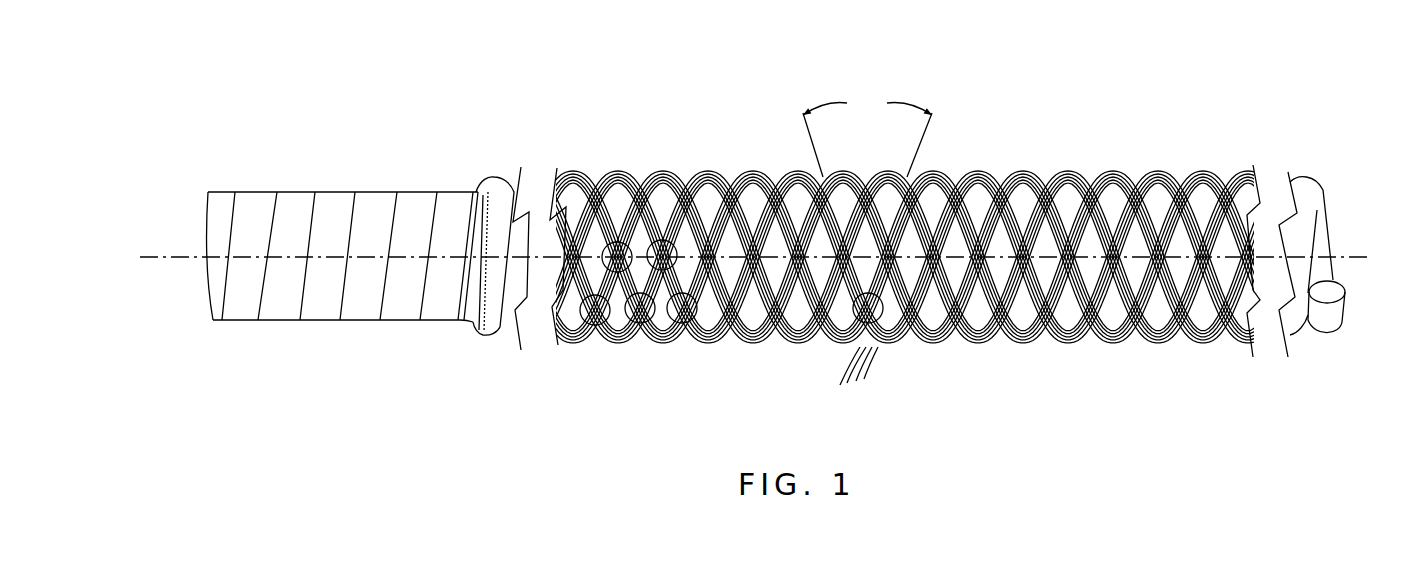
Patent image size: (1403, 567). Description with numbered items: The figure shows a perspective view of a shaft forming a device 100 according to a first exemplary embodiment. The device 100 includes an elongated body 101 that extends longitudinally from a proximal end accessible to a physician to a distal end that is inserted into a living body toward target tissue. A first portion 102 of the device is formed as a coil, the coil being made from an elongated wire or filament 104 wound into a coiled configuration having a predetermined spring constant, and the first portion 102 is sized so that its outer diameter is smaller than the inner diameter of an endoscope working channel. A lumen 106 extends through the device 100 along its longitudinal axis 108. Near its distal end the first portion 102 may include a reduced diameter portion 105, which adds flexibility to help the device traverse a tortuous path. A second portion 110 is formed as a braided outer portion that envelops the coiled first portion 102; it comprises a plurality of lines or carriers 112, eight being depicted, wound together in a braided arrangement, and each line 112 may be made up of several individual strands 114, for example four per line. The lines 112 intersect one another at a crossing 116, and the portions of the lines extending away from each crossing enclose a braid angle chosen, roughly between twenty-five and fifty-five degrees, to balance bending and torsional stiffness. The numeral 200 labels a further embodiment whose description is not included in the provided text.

In FIG. 1, the device 100 is at (225, 118).
In FIG. 1, the elongated body 101 is at (487, 187).
In FIG. 1, the first portion 102 is at (263, 207).
In FIG. 1, the wire or filament 104 is at (287, 322).
In FIG. 1, the reduced diameter portion 105 is at (380, 207).
In FIG. 1, the lumen 106 is at (195, 232).
In FIG. 1, the longitudinal axis 108 is at (172, 260).
In FIG. 1, the second portion 110 is at (1077, 170).
In FIG. 1, the lines or carriers 112 is at (618, 170).
In FIG. 2, the lines or carriers 112 is at (850, 561).
In FIG. 1, the strands 114 is at (854, 380).
In FIG. 1, the crossing 116 is at (615, 341).
In FIG. 2, the catheter shaft assembly (FIG. 2) 200 is at (375, 566).